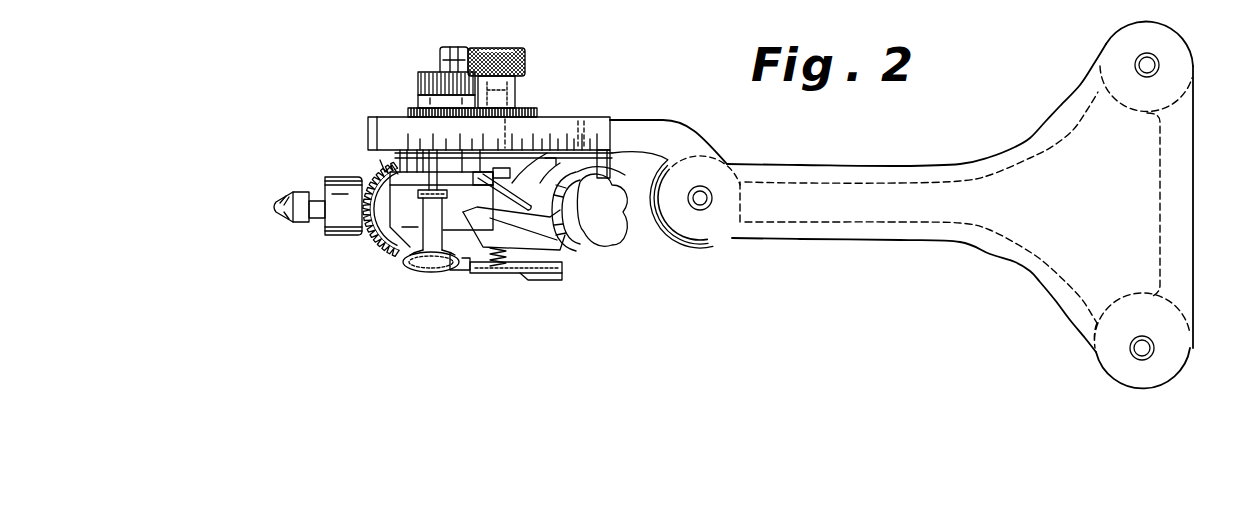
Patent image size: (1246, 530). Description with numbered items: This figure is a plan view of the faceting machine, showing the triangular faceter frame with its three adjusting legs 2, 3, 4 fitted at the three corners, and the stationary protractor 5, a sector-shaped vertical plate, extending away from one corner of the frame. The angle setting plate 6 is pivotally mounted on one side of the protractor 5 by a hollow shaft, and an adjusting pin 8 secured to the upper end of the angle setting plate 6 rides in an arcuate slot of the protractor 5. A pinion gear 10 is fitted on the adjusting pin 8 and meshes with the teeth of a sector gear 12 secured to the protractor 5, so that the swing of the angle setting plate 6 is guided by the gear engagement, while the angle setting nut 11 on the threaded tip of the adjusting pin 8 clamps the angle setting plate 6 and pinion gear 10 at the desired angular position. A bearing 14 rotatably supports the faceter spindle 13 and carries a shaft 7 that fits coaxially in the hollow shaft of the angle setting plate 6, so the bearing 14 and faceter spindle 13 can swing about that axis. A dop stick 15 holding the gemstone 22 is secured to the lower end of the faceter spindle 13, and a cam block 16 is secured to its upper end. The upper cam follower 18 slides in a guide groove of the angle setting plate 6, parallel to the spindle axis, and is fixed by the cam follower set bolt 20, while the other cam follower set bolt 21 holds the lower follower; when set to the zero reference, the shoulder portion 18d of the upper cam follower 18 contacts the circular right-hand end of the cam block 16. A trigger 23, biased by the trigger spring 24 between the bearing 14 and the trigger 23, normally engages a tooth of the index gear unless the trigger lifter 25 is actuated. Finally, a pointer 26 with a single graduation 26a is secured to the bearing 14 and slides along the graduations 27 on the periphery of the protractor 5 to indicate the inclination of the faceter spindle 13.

The adjusting leg 2 is at (705, 194).
The adjusting leg 3 is at (1155, 346).
The adjusting leg 4 is at (1160, 62).
The stationary protractor 5 is at (615, 118).
The angle setting plate 6 is at (413, 167).
The shaft 7 is at (462, 47).
The adjusting pin 8 is at (510, 140).
The pinion gear 10 is at (525, 113).
The angle setting nut 11 is at (507, 48).
The sector gear 12 is at (403, 110).
The faceter spindle 13 is at (347, 229).
The bearing 14 is at (410, 239).
The dop stick 15 is at (318, 222).
The cam block 16 is at (547, 210).
The upper cam follower 18 is at (387, 163).
The shoulder portion 18d is at (560, 248).
The cam follower set bolt 20 is at (423, 264).
The cam follower set bolt 21 is at (575, 270).
The gemstone 22 is at (283, 215).
The trigger 23 is at (492, 274).
The trigger spring 24 is at (533, 268).
The trigger lifter 25 is at (472, 264).
The pointer 26 is at (608, 172).
The single graduation 26a is at (550, 157).
The graduations 27 is at (580, 133).